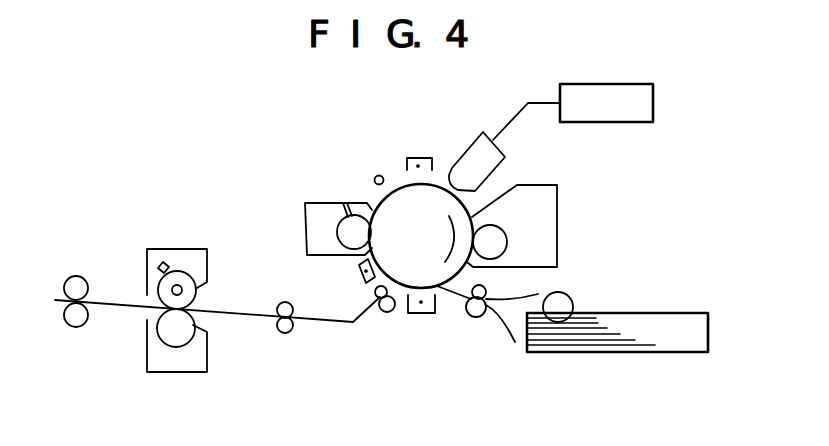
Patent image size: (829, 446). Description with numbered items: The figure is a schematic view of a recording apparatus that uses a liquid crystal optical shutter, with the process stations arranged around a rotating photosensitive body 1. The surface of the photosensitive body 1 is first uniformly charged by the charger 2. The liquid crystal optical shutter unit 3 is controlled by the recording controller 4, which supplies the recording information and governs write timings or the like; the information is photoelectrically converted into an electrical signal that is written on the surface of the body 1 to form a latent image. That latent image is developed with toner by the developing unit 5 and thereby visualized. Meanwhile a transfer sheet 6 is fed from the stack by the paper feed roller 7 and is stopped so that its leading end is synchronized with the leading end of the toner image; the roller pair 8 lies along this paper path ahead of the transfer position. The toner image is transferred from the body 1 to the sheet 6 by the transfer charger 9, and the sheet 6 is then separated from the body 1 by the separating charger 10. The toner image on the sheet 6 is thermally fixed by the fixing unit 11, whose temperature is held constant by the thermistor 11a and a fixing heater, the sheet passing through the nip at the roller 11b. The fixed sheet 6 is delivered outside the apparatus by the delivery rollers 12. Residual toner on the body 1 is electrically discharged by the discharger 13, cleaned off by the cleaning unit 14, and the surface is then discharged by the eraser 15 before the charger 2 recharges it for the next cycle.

The photosensitive body 1 is at (402, 200).
The charger 2 is at (419, 158).
The liquid crystal optical shutter unit 3 is at (505, 157).
The recording controller 4 is at (600, 84).
The developing unit 5 is at (558, 220).
The transfer sheet 6 is at (653, 313).
The paper feed roller 7 is at (565, 293).
The register rollers 8 is at (476, 317).
The transfer charger 9 is at (421, 313).
The separating charger 10 is at (387, 312).
The fixing unit 11 is at (185, 249).
The thermistor 11a is at (160, 262).
The heat roller 11b is at (197, 288).
The delivery rollers 12 is at (75, 277).
The discharger 13 is at (359, 269).
The cleaning unit 14 is at (322, 203).
The eraser 15 is at (372, 175).